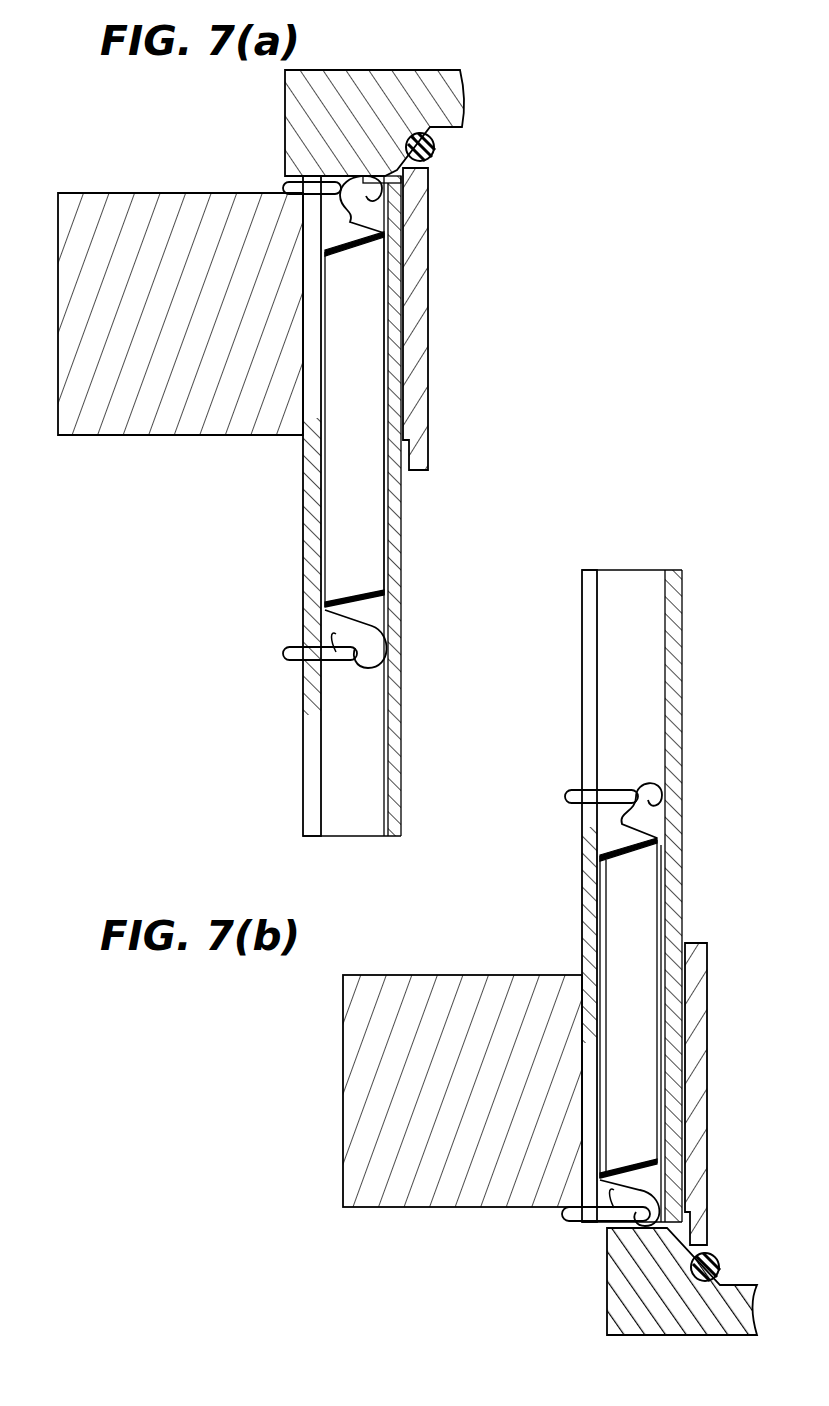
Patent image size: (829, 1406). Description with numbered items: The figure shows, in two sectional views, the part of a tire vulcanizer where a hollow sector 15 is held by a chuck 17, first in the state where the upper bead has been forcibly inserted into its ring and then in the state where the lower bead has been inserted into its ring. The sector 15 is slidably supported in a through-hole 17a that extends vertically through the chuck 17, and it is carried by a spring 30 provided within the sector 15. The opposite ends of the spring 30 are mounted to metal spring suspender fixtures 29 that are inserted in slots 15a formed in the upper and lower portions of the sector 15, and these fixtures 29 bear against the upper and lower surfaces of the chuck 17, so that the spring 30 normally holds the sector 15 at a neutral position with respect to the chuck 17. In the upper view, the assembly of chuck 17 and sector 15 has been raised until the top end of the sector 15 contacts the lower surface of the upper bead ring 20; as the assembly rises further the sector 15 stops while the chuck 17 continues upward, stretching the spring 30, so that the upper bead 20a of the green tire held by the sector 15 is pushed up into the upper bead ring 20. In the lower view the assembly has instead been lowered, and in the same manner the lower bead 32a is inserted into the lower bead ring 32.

The sector 15 is at (397, 586).
In FIG. 7b, the sector 15 is at (684, 760).
The slots 15a is at (308, 370).
In FIG. 7b, the slots 15a is at (590, 665).
The chuck 17 is at (425, 300).
In FIG. 7b, the chuck 17 is at (520, 975).
The through-hole 17a is at (428, 372).
In FIG. 7b, the through-hole 17a is at (680, 1005).
The upper bead ring 20 is at (300, 113).
The upper bead 20a is at (435, 146).
The metal spring suspender fixtures 29 is at (285, 185).
In FIG. 7b, the metal spring suspender fixtures 29 is at (572, 793).
The spring 30 is at (372, 604).
In FIG. 7b, the spring 30 is at (635, 822).
In FIG. 7b, the lower bead ring 32 is at (612, 1257).
In FIG. 7b, the lower bead 32a is at (712, 1252).